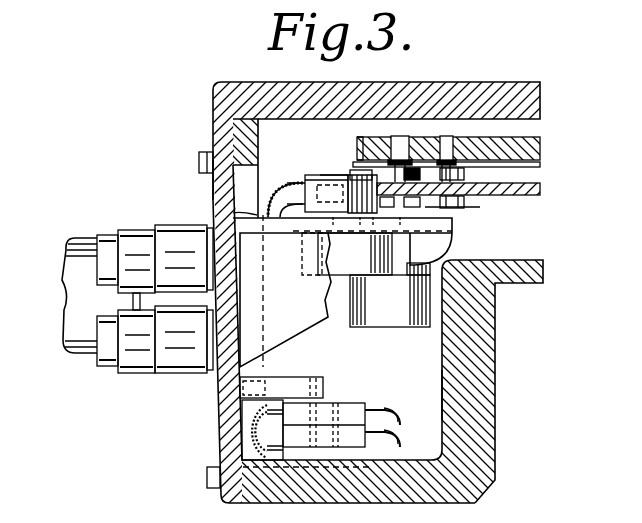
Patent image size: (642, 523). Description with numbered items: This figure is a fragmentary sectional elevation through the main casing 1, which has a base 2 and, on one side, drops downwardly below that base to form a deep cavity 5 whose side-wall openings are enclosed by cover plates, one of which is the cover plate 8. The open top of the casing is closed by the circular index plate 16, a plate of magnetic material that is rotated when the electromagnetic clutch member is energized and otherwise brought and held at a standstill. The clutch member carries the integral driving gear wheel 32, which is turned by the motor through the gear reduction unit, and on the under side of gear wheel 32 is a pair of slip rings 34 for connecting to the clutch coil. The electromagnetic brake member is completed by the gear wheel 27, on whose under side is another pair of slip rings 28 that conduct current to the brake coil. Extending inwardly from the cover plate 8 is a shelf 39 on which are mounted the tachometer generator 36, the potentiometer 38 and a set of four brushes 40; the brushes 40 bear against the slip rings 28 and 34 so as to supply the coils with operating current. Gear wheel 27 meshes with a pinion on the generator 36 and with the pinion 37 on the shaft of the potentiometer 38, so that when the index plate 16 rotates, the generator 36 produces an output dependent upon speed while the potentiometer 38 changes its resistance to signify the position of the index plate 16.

The main casing 1 is at (495, 366).
The base 2 is at (537, 270).
The deep cavity 5 is at (430, 387).
The cover plate 8 is at (222, 183).
The index plate 16 is at (527, 92).
The gear wheel 27 is at (523, 193).
The slip rings 28 is at (467, 197).
The driving gear wheel 32 is at (533, 143).
The slip rings 34 is at (455, 150).
The tachometer generator 36 is at (383, 312).
The pinion 37 is at (352, 172).
The potentiometer 38 is at (343, 260).
The shelf 39 is at (222, 208).
The brushes 40 is at (392, 163).